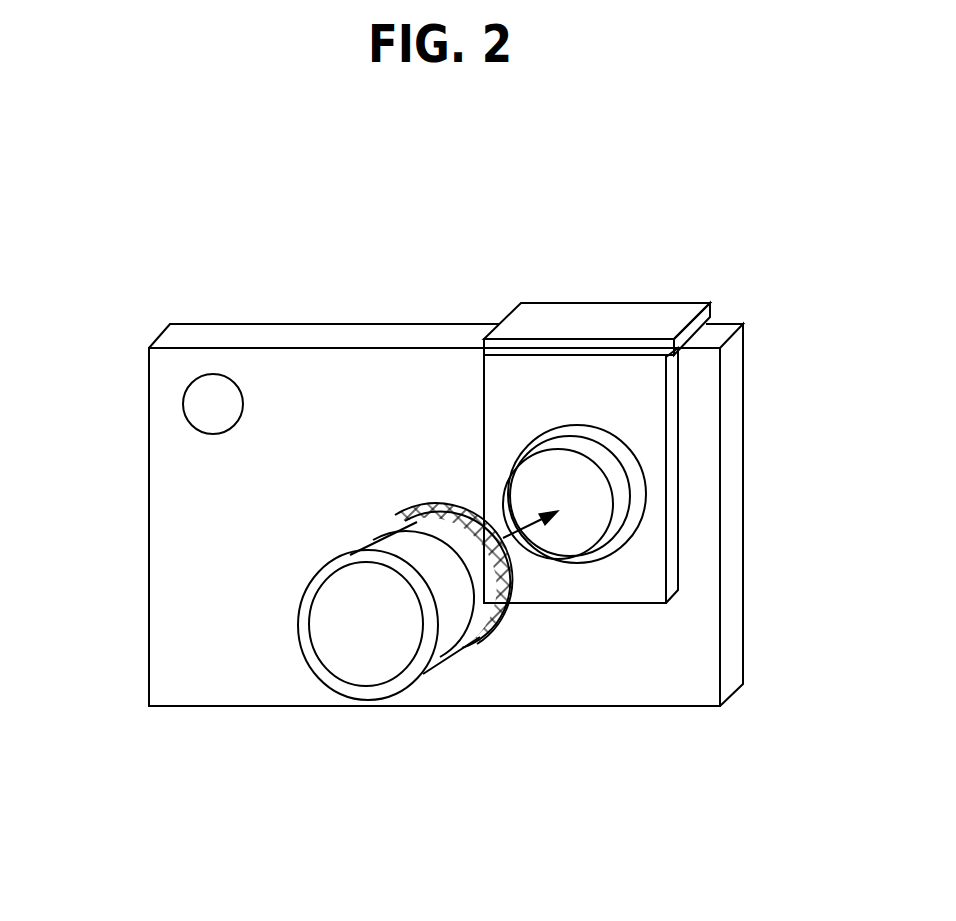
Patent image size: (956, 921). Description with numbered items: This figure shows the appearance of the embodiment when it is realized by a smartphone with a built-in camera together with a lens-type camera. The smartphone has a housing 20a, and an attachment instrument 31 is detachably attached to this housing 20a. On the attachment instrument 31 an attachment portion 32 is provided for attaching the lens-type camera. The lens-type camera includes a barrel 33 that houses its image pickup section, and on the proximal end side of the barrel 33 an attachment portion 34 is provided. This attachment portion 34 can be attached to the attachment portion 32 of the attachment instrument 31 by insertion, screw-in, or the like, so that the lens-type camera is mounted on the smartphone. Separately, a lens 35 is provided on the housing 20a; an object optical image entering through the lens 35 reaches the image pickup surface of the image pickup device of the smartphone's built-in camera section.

The housing 20a is at (395, 332).
The attachment instrument 31 is at (620, 323).
The attachment portion 32 is at (623, 497).
The barrel 33 is at (450, 632).
The attachment portion 34 is at (508, 613).
The lens 35 is at (183, 403).